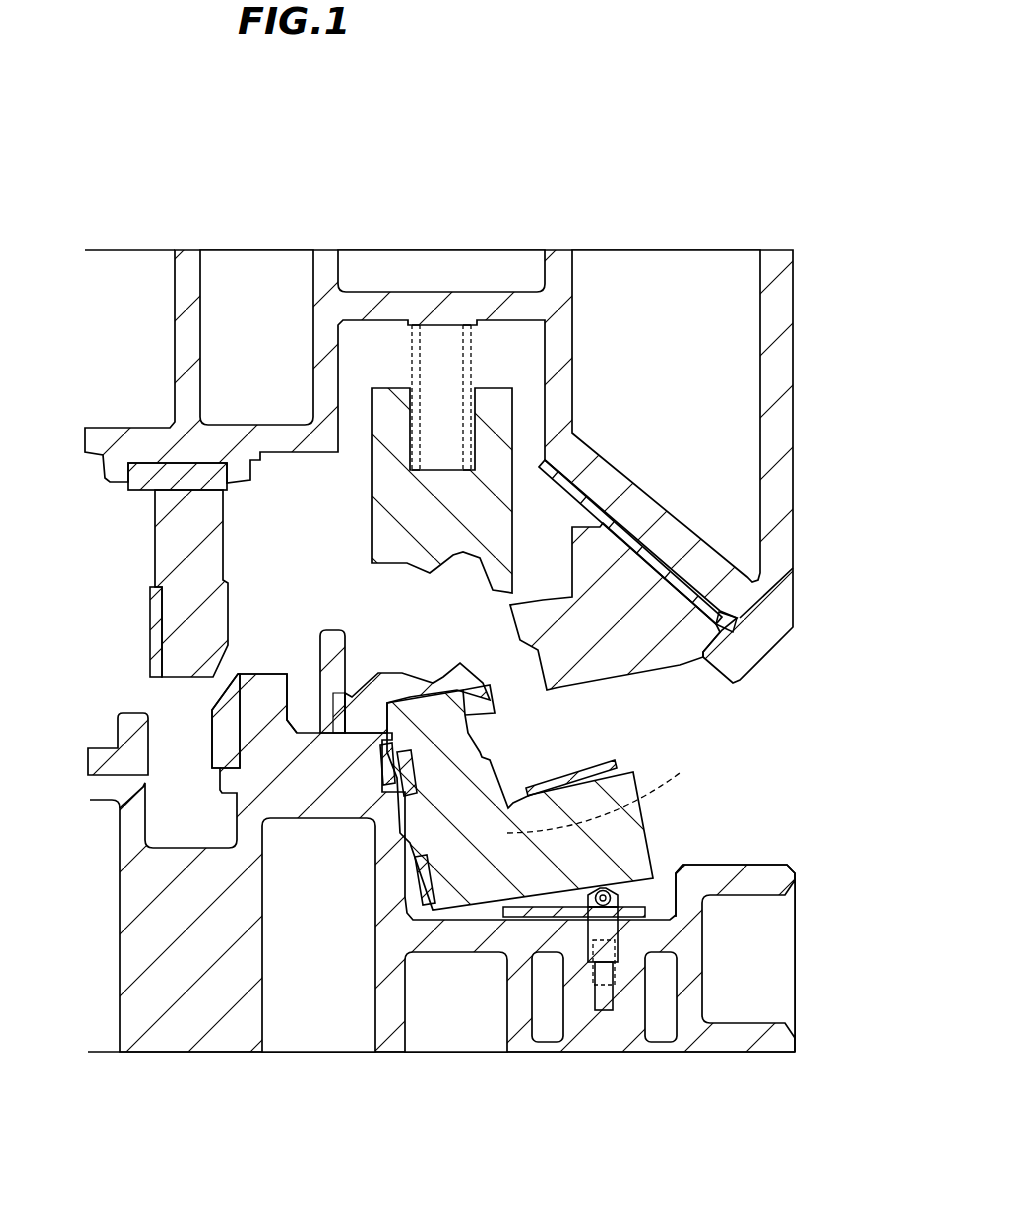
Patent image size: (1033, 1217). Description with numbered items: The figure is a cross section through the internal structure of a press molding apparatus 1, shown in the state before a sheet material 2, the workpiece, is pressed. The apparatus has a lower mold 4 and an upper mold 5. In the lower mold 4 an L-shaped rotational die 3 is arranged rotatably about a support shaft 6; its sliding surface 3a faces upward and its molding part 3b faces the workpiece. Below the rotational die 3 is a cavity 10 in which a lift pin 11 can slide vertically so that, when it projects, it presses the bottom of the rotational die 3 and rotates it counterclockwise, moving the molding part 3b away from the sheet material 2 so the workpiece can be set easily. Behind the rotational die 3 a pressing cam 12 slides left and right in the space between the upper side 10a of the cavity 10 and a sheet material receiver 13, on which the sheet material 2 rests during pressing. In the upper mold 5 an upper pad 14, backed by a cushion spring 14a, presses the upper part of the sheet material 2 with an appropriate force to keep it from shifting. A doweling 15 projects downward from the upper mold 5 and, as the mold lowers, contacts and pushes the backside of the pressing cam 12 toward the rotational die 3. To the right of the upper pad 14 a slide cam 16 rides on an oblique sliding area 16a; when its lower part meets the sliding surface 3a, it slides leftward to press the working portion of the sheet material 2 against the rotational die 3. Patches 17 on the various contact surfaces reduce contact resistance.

The press molding apparatus 1 is at (703, 163).
The sheet material 2 is at (497, 697).
The rotational die 3 is at (553, 797).
The sliding surface 3a is at (625, 770).
The molding part 3b is at (497, 720).
The lower mold 4 is at (705, 1052).
The upper mold 5 is at (322, 248).
The support shaft 6 is at (652, 786).
The cavity 10 is at (441, 867).
The upper side of the cavity 10a is at (302, 805).
The lift pin 11 is at (598, 960).
The pressing cam 12 is at (264, 690).
The sheet material receiver 13 is at (333, 640).
The upper pad 14 is at (385, 393).
The cushion spring 14a is at (455, 350).
The doweling 15 is at (155, 550).
The slide cam 16 is at (678, 662).
The sliding area 16a is at (672, 582).
The patches 17 is at (152, 632).